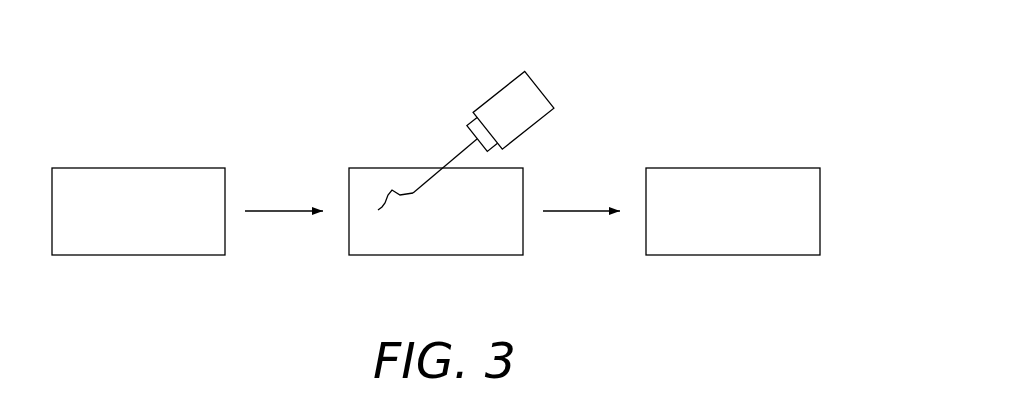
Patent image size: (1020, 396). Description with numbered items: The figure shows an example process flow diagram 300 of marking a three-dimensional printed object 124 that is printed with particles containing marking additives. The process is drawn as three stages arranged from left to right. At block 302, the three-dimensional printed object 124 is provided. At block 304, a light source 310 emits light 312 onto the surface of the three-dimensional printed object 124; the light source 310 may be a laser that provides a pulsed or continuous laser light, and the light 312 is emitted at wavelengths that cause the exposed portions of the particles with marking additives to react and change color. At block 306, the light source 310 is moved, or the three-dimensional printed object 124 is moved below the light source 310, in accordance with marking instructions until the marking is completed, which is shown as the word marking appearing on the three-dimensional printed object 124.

The process flow diagram 300 is at (238, 88).
The block 302 is at (126, 166).
The block 304 is at (396, 166).
The block 306 is at (732, 166).
The light source 310 is at (542, 90).
The light 312 is at (452, 158).
The 3D printed object 124 is at (122, 255).